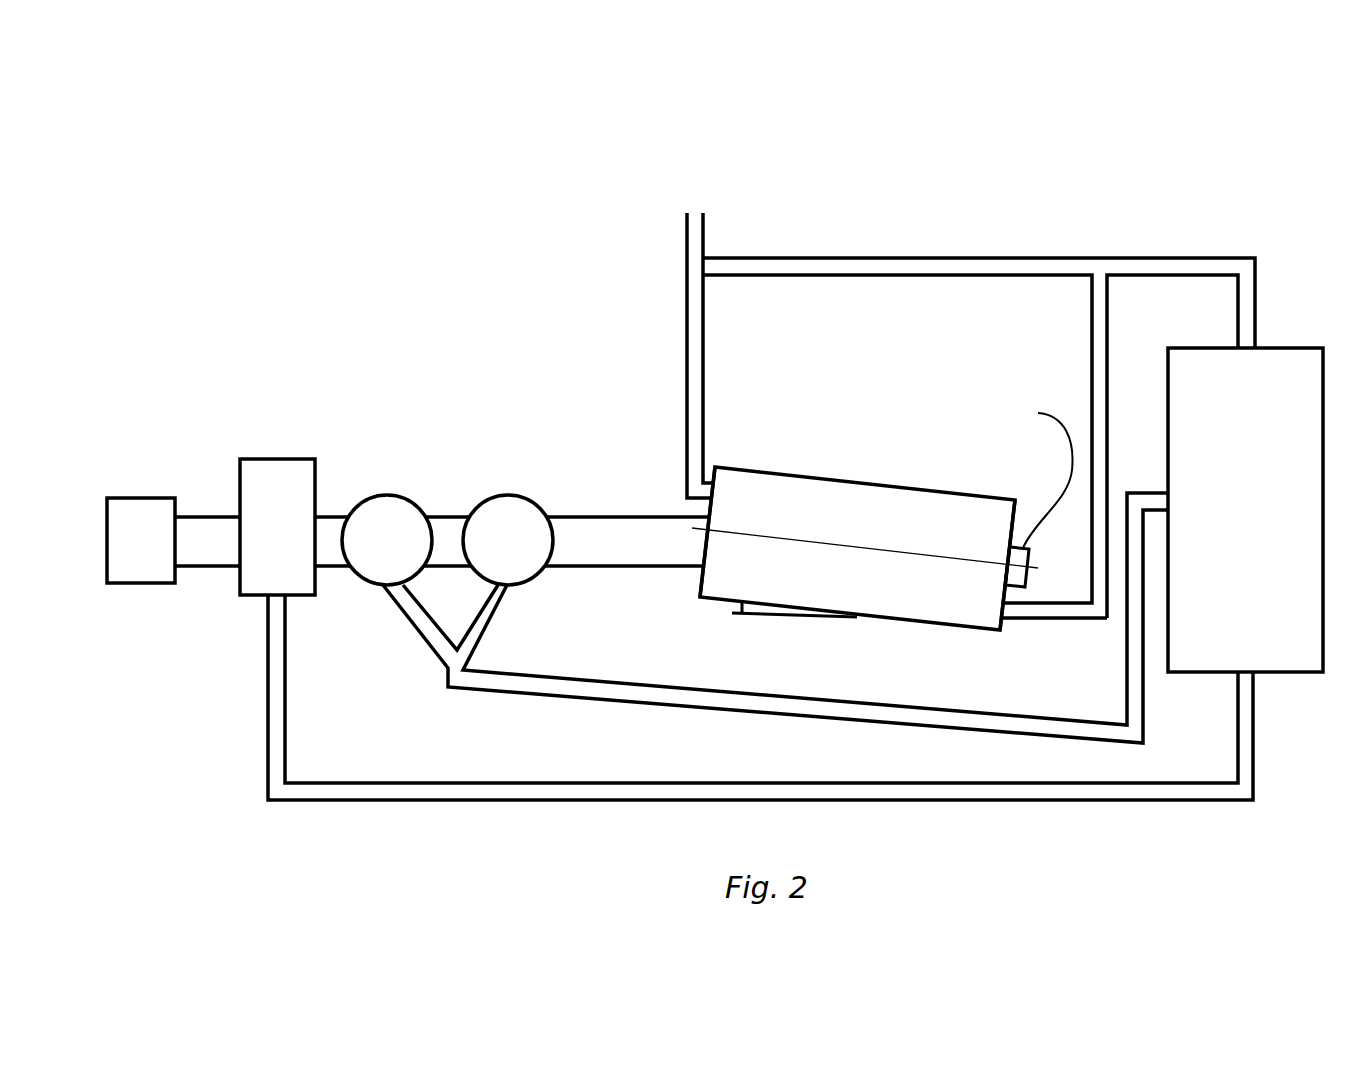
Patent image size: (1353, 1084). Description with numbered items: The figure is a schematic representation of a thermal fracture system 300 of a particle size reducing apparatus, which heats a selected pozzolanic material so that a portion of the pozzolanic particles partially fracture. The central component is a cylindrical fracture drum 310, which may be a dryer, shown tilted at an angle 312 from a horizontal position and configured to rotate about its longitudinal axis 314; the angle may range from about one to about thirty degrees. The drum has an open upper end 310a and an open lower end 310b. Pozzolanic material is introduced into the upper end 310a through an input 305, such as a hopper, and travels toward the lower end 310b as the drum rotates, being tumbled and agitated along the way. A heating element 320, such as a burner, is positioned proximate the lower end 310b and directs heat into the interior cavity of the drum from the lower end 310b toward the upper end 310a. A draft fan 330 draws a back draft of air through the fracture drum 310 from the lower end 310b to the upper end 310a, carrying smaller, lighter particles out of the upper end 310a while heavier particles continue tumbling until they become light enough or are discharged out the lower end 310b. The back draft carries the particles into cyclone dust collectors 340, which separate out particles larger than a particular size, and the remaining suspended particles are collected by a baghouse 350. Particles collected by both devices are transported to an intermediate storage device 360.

The thermal fracture system 300 is at (817, 155).
The input 305 is at (697, 224).
The fracture drum 310 is at (882, 413).
The upper end 310a is at (727, 460).
The lower end 310b is at (1012, 494).
The angle 312 is at (737, 608).
The longitudinal axis 314 is at (831, 540).
The heating element 320 is at (1034, 496).
The draft fan 330 is at (162, 550).
The cyclone dust collectors 340 is at (407, 552).
The baghouse 350 is at (298, 537).
The intermediate storage device 360 is at (1267, 507).